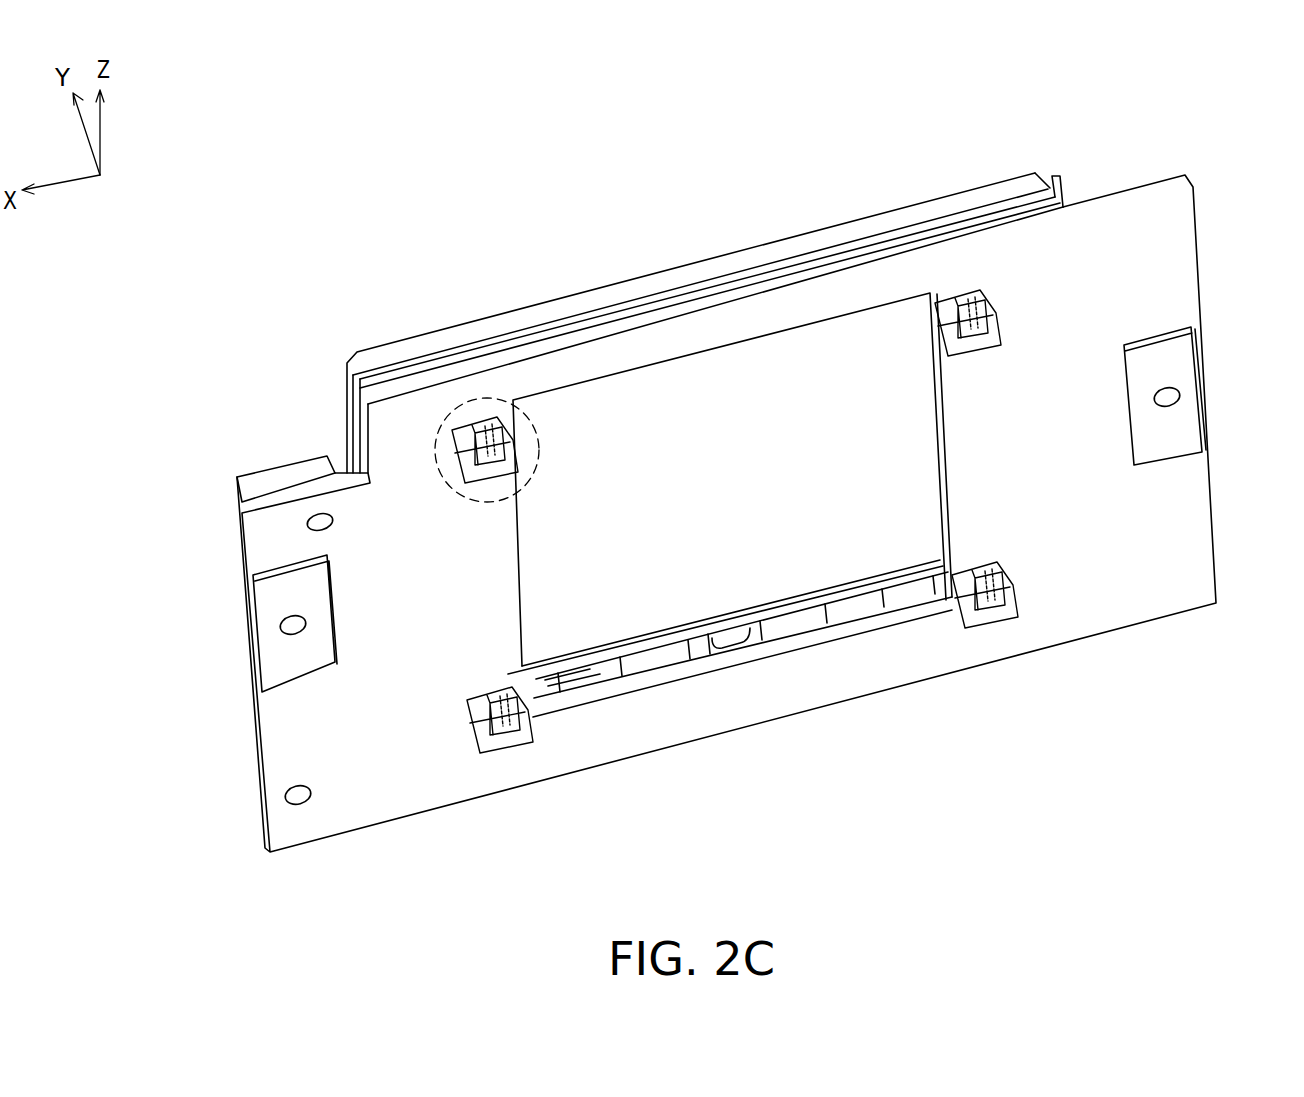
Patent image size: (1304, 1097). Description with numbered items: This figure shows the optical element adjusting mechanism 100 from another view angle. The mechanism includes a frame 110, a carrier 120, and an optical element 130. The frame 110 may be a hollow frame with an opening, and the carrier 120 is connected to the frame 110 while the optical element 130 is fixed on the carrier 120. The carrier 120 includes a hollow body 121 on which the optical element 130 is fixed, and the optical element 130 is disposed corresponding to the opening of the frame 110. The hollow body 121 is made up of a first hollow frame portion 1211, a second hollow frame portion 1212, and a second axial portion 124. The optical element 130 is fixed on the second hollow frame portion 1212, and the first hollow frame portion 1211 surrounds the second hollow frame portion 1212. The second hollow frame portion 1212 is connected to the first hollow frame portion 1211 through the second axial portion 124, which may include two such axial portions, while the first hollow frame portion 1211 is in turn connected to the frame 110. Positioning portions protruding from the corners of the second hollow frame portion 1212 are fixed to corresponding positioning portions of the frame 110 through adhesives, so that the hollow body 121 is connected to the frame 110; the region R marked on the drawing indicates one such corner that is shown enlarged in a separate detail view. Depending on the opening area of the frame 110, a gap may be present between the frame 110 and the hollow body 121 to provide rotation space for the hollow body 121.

The optical element adjusting mechanism 100 is at (767, 456).
The frame 110 is at (1183, 256).
The carrier 120 is at (718, 437).
The hollow body 121 is at (705, 493).
The first hollow frame portion 1211 is at (667, 275).
The second hollow frame portion 1212 is at (730, 687).
The second axial portion 124 is at (733, 640).
The optical element 130 is at (772, 372).
The region R is at (478, 400).